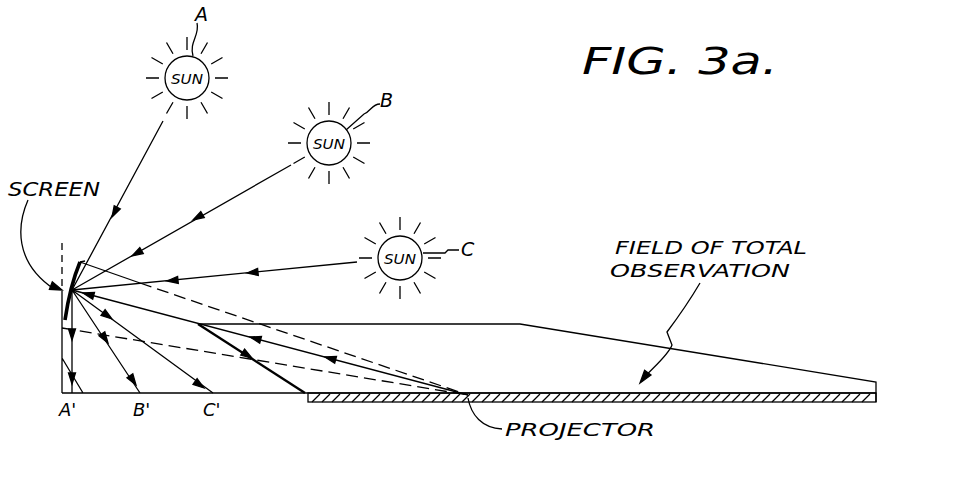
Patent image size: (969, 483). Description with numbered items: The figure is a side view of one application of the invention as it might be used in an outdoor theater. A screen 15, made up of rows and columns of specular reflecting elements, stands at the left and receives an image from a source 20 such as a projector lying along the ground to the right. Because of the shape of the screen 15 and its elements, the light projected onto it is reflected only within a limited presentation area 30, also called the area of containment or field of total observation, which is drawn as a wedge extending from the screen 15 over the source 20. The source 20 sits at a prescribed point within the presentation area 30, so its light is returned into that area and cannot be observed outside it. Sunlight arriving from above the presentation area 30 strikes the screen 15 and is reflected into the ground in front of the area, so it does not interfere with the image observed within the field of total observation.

The screen 15 is at (64, 301).
The source 20 is at (466, 398).
The presentation area 30 is at (532, 367).